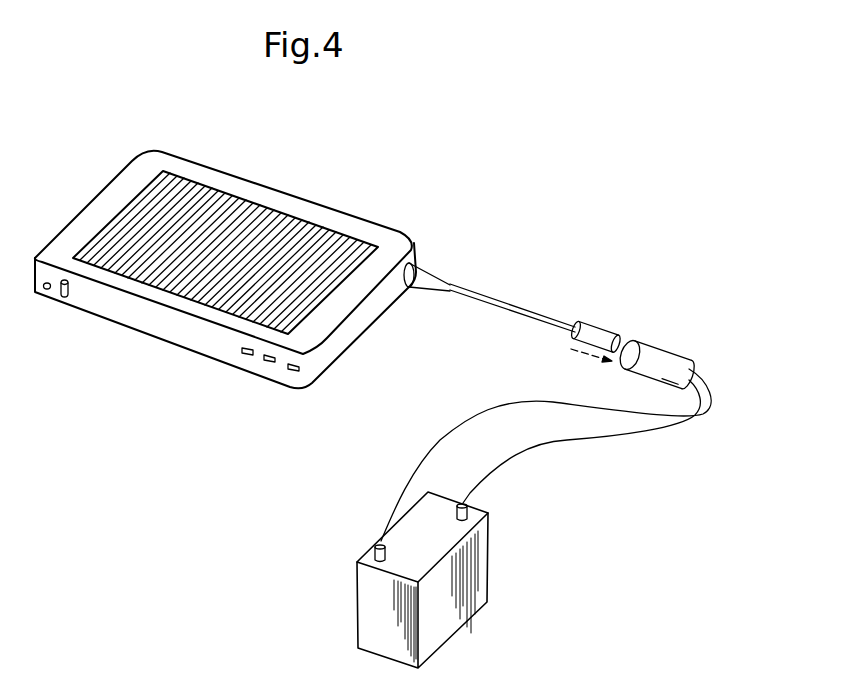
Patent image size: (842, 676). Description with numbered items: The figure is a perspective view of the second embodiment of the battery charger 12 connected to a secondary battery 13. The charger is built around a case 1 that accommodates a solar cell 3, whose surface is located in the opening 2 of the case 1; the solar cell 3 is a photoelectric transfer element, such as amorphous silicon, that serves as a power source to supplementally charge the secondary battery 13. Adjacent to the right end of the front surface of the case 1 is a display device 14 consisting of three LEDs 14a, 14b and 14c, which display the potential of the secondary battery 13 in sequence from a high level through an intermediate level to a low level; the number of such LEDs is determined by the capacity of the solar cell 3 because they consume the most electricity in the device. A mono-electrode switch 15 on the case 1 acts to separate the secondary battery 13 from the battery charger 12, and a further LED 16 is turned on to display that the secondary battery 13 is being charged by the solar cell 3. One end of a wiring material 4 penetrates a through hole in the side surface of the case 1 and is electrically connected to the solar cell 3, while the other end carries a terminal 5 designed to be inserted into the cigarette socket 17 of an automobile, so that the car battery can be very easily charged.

The case 1 is at (122, 176).
The opening 2 is at (272, 212).
The solar cell 3 is at (198, 194).
The wiring material 4 is at (515, 306).
The terminal 5 is at (592, 330).
The battery charger 12 is at (368, 219).
The secondary battery 13 is at (477, 558).
The display device 14 is at (313, 500).
The LED 14a is at (244, 356).
The LED 14b is at (264, 363).
The LED 14c is at (291, 371).
The mono-electrode switch 15 is at (64, 298).
The LED 16 is at (45, 292).
The cigarette socket 17 is at (648, 358).